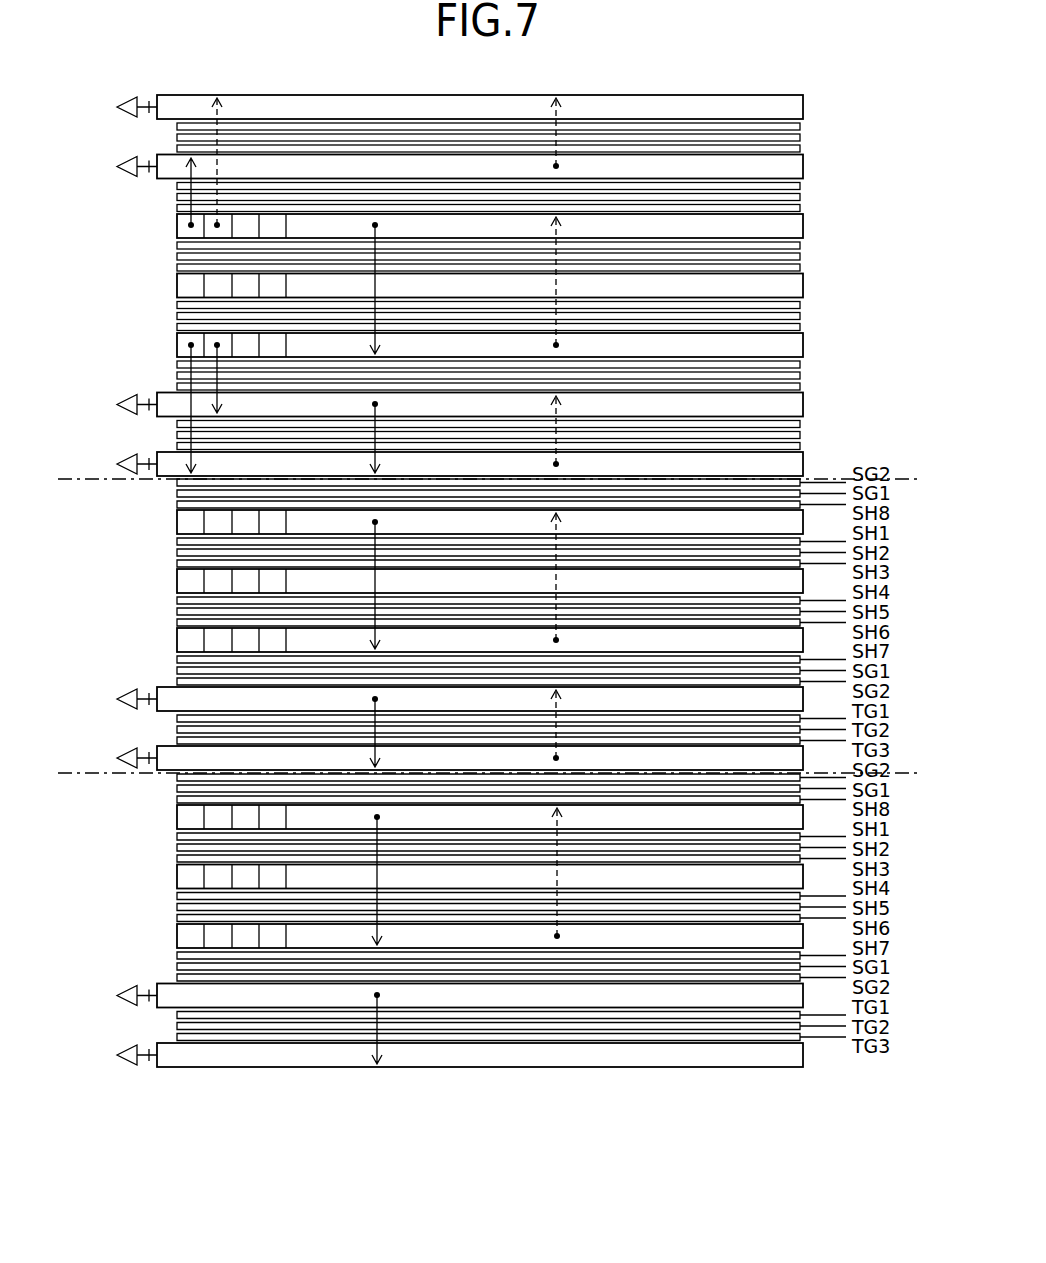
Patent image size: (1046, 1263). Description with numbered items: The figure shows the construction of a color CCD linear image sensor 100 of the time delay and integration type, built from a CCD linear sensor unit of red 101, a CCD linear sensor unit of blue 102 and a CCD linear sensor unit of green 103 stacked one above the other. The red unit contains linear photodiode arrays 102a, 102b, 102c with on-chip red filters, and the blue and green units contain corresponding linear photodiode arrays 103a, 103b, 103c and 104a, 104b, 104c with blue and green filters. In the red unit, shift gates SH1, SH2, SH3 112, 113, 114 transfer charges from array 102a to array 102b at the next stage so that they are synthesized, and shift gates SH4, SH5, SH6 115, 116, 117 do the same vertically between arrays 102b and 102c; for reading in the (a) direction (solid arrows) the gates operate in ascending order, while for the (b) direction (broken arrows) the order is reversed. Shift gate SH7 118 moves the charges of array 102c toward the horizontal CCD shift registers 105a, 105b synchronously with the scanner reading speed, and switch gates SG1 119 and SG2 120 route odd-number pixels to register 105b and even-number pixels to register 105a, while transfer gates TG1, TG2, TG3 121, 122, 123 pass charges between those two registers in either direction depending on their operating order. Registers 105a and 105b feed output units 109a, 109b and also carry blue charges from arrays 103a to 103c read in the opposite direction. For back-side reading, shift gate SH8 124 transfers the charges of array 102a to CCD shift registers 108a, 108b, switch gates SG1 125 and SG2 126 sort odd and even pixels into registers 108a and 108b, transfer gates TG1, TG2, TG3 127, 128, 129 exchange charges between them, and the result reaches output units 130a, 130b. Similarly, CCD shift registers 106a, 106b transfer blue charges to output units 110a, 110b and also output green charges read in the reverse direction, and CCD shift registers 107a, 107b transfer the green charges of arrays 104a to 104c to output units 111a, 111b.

The color CCD linear image sensor 100 is at (584, 1089).
The CCD linear sensor unit of red 101 is at (152, 300).
The CCD linear sensor unit of blue 102 is at (152, 598).
The CCD linear sensor unit of green 103 is at (152, 888).
The linear photodiode array 102a is at (490, 226).
The linear photodiode array 102b is at (490, 286).
The linear photodiode array 102c is at (490, 345).
The linear photodiode array 103a is at (490, 522).
The linear photodiode array 103b is at (490, 581).
The linear photodiode array 103c is at (490, 640).
The linear photodiode array 104a is at (490, 817).
The linear photodiode array 104b is at (490, 877).
The linear photodiode array 104c is at (490, 936).
The CCD shift register 105a is at (480, 405).
The CCD shift register 105b is at (480, 464).
The CCD shift register 106a is at (480, 699).
The CCD shift register 106b is at (480, 758).
The CCD shift register 107a is at (480, 996).
The CCD shift register 107b is at (480, 1055).
The CCD shift register 108a is at (480, 107).
The CCD shift register 108b is at (480, 167).
The output unit 109a is at (107, 391).
The output unit 109b is at (107, 450).
The output unit 110a is at (107, 686).
The output unit 110b is at (107, 744).
The output unit 111a is at (111, 982).
The output unit 111b is at (111, 1041).
The output unit 130a is at (111, 95).
The output unit 130b is at (111, 153).
The shift gate SH1 112 is at (800, 246).
The shift gate SH2 113 is at (800, 256).
The shift gate SH3 114 is at (800, 268).
The shift gate SH4 115 is at (800, 305).
The shift gate SH5 116 is at (800, 316).
The shift gate SH6 117 is at (800, 327).
The shift gate SH7 118 is at (800, 364).
The switch gate SG1 119 is at (800, 376).
The switch gate SG2 120 is at (800, 386).
The transfer gate TG1 121 is at (800, 424).
The transfer gate TG2 122 is at (800, 435).
The transfer gate TG3 123 is at (800, 446).
The shift gate SH8 124 is at (800, 208).
The switch gate SG1 125 is at (800, 197).
The switch gate SG2 126 is at (800, 186).
The transfer gate TG1 127 is at (800, 126).
The transfer gate TG2 128 is at (800, 138).
The transfer gate TG3 129 is at (800, 148).